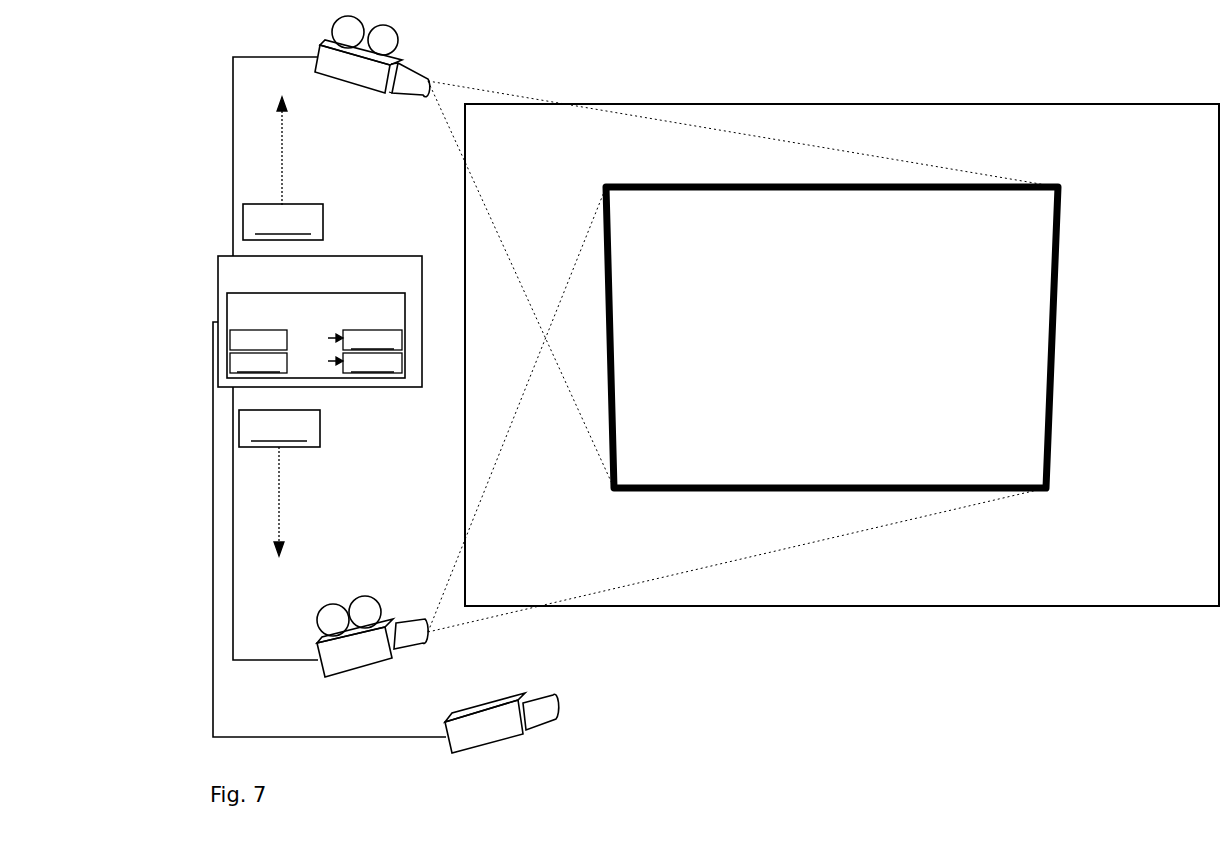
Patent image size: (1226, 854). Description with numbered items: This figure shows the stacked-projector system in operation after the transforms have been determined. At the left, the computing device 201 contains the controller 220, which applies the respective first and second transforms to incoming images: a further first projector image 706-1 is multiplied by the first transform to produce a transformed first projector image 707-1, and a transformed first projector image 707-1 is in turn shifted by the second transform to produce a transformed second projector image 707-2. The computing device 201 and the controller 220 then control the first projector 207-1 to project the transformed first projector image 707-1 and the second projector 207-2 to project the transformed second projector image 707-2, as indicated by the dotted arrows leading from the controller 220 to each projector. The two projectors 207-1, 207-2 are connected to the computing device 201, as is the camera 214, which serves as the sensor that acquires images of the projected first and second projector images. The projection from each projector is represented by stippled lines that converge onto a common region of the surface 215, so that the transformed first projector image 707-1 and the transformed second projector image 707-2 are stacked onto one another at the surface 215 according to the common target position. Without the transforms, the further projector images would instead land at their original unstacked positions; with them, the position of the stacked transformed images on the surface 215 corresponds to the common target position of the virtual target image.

The computing device 201 is at (304, 288).
The controller 220 is at (301, 323).
The camera 214 is at (468, 742).
The surface 215 is at (465, 202).
The first projector 207-1 is at (372, 86).
The second projector 207-2 is at (375, 653).
The further first projector image 706-1 is at (280, 349).
The transformed first projector image 707-1 is at (935, 172).
The transformed second projector image 707-2 is at (920, 516).